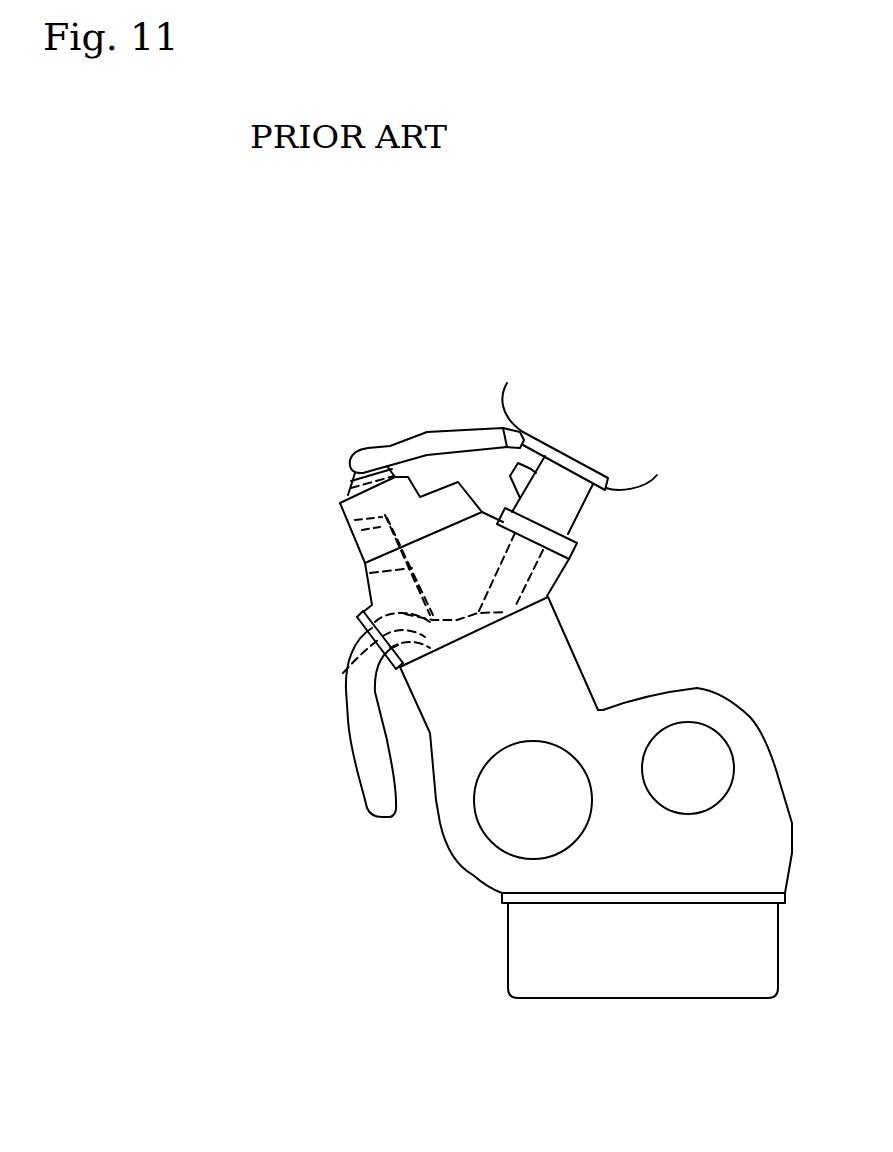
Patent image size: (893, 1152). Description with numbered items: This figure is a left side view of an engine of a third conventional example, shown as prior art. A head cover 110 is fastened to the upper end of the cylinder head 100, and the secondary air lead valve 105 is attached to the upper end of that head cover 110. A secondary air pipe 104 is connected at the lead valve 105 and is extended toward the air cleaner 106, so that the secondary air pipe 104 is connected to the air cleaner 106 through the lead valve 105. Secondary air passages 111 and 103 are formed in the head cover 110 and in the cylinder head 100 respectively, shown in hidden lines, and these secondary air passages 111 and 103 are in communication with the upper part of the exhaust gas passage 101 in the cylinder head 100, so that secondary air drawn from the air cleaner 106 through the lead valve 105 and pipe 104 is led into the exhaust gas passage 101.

The cylinder head 100 is at (367, 590).
The exhaust gas passage 101 is at (343, 673).
The secondary air passage 103 is at (357, 575).
The secondary air pipe 104 is at (400, 440).
The secondary air lead valve 105 is at (347, 482).
The air cleaner 106 is at (656, 476).
The head cover 110 is at (350, 545).
The secondary air passage 111 is at (343, 530).